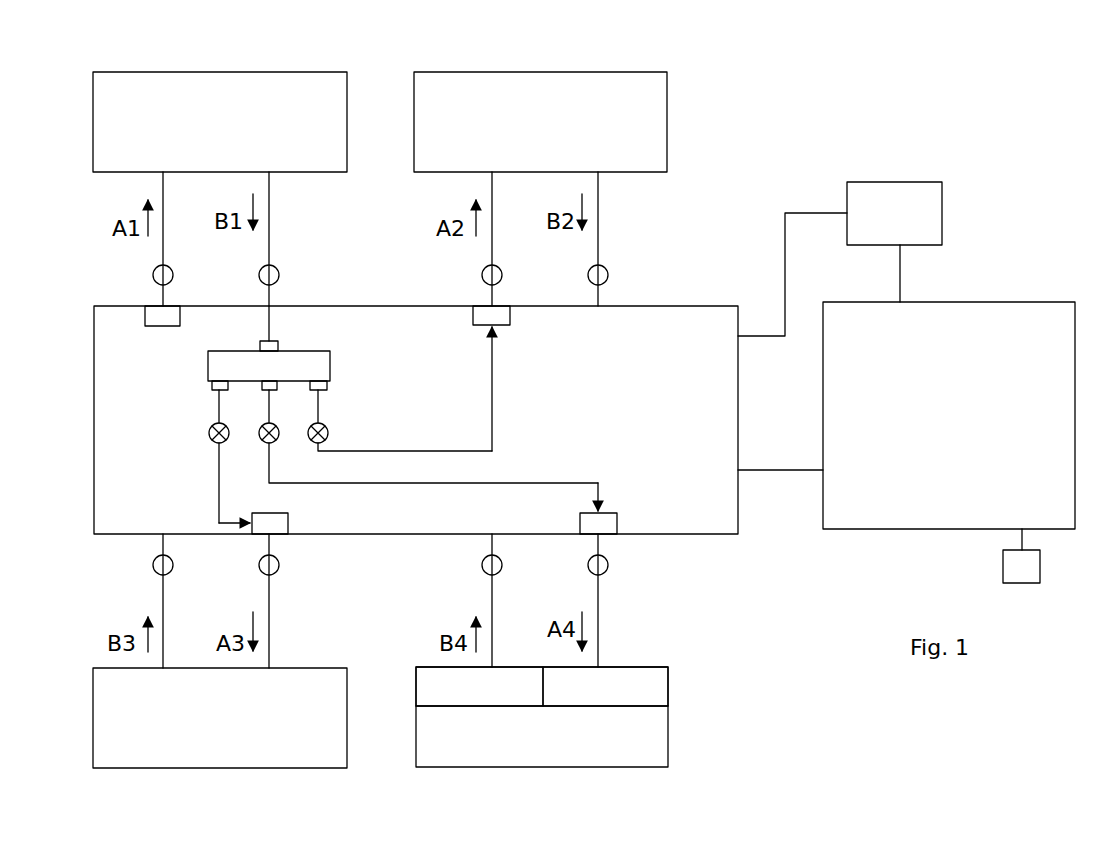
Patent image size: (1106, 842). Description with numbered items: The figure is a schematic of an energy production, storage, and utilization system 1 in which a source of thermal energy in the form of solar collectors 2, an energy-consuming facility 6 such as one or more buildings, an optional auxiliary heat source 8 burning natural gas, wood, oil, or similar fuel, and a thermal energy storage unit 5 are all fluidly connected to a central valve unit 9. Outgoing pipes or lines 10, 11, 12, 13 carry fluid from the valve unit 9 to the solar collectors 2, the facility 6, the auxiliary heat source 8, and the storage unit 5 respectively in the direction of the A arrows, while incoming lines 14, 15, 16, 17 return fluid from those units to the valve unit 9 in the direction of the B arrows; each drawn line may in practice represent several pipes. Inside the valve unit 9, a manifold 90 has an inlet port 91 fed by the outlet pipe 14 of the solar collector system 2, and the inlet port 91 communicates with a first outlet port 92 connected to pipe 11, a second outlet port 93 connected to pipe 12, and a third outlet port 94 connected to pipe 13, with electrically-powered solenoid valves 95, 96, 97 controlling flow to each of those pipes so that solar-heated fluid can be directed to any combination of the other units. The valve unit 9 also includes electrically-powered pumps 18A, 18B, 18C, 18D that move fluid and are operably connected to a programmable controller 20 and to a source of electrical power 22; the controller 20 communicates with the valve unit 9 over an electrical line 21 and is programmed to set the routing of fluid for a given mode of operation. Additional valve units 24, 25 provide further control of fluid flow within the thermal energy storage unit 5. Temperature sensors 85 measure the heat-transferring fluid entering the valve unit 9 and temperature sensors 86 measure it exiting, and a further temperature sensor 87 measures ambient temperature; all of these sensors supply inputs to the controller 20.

The energy production, storage, and utilization system 1 is at (790, 183).
The solar collectors 2 is at (217, 90).
The thermal energy storage unit 5 is at (550, 758).
The energy-consuming facility 6 is at (557, 80).
The auxiliary heat source 8 is at (213, 757).
The valve unit 9 is at (676, 317).
The outgoing fluid line 10 is at (163, 215).
The outgoing fluid line 11 is at (492, 220).
The outgoing fluid line 12 is at (269, 650).
The outgoing fluid line 13 is at (598, 641).
The incoming fluid line 14 is at (269, 216).
The incoming fluid line 15 is at (598, 220).
The incoming fluid line 16 is at (163, 646).
The incoming fluid line 17 is at (492, 641).
The electrically-powered pump 18A is at (158, 327).
The electrically-powered pump 18B is at (480, 327).
The electrically-powered pump 18C is at (608, 512).
The electrically-powered pump 18D is at (284, 514).
The programmable controller 20 is at (946, 318).
The electrical line 21 is at (773, 471).
The source of electrical power 22 is at (918, 206).
The valve unit 24 is at (428, 692).
The valve unit 25 is at (648, 688).
The temperature sensor 85 is at (279, 276).
The temperature sensor 86 is at (153, 277).
The temperature sensor 87 is at (1035, 578).
The manifold 90 is at (208, 358).
The inlet port 91 is at (280, 345).
The first outlet port 92 is at (317, 393).
The second outlet port 93 is at (217, 394).
The third outlet port 94 is at (267, 393).
The solenoid valve 95 is at (307, 431).
The solenoid valve 96 is at (258, 431).
The solenoid valve 97 is at (208, 431).